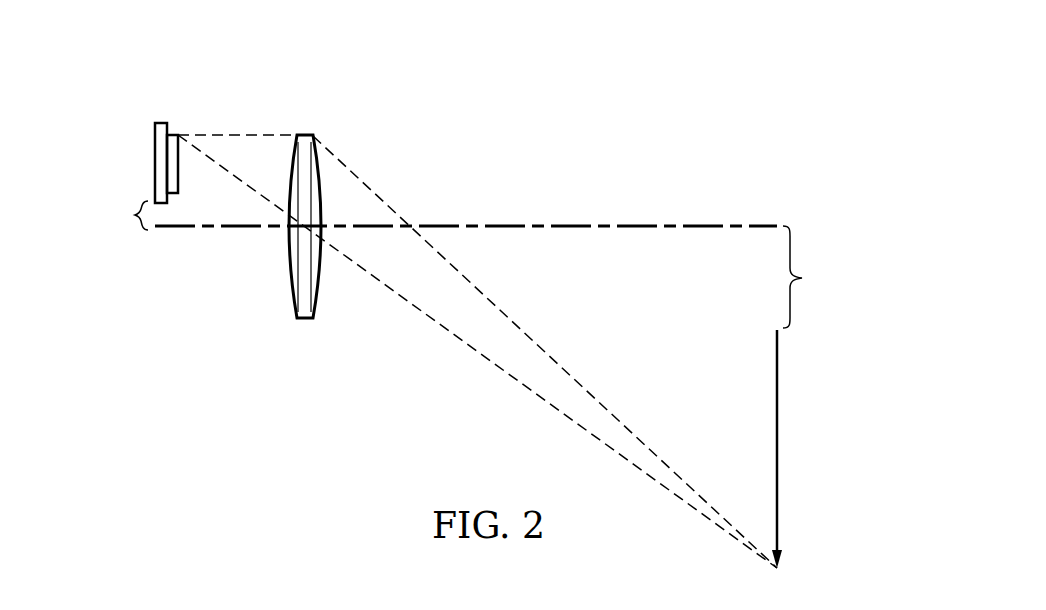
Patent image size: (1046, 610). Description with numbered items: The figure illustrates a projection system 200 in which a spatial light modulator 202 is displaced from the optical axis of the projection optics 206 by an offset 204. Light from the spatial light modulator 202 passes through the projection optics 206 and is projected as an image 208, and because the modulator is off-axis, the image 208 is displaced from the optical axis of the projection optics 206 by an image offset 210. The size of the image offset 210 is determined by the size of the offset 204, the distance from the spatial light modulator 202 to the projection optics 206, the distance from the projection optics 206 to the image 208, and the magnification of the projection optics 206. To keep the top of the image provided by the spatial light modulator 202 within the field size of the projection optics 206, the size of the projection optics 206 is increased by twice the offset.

The projection system 200 is at (630, 108).
The spatial light modulator 202 is at (155, 165).
The offset 204 is at (95, 243).
The projection optics 206 is at (312, 137).
The image 208 is at (777, 445).
The image offset 210 is at (872, 277).